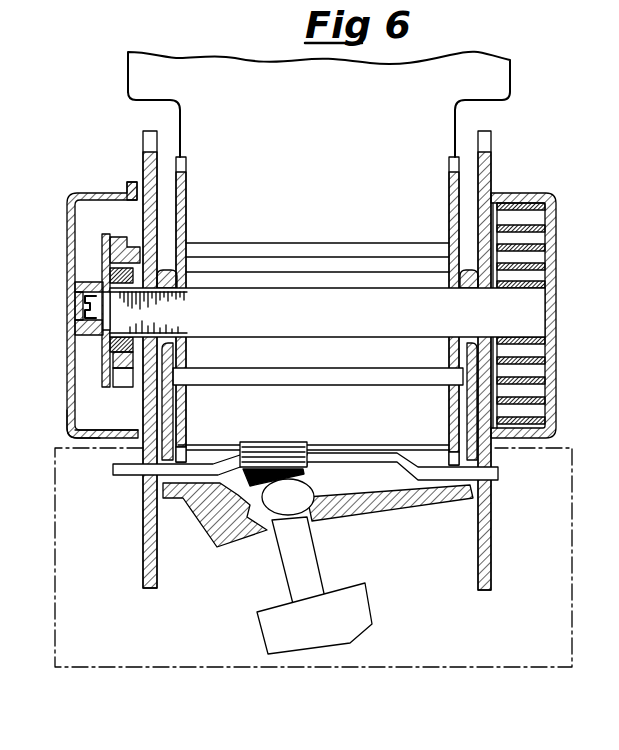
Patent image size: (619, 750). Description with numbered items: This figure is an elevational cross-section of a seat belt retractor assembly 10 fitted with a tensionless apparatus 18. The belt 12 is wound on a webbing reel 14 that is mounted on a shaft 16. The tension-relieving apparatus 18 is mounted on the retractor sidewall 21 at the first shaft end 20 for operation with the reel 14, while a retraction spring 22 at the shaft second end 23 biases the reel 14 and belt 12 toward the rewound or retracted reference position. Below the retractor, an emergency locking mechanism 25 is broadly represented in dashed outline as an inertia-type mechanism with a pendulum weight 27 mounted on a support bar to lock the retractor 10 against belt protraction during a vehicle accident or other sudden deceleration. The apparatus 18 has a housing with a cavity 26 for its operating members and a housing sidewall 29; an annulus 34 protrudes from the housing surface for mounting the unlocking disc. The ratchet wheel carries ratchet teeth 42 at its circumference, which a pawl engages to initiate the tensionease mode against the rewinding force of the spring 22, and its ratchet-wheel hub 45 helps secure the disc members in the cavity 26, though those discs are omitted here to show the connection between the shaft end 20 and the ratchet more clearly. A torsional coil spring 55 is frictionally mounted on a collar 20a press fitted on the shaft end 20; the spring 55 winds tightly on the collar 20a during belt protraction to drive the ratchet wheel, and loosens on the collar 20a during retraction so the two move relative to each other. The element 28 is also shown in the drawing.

The seat belt retractor assembly 10 is at (105, 157).
The belt 12 is at (455, 123).
The webbing reel 14 is at (360, 243).
The shaft 16 is at (360, 320).
The tensionless apparatus 18 is at (65, 212).
The first shaft end 20 is at (106, 340).
The collar 20a is at (160, 276).
The retractor sidewall 21 is at (143, 158).
The retraction spring 22 is at (536, 301).
The shaft second end 23 is at (538, 308).
The emergency locking mechanism 25 is at (345, 667).
The cavity 26 is at (112, 226).
The pendulum weight 27 is at (378, 613).
The housing wall 28 is at (67, 413).
The housing sidewall 29 is at (102, 192).
The annulus 34 is at (80, 283).
The ratchet teeth 42 is at (133, 241).
The ratchet-wheel hub 45 is at (112, 325).
The torsional coil spring 55 is at (122, 368).